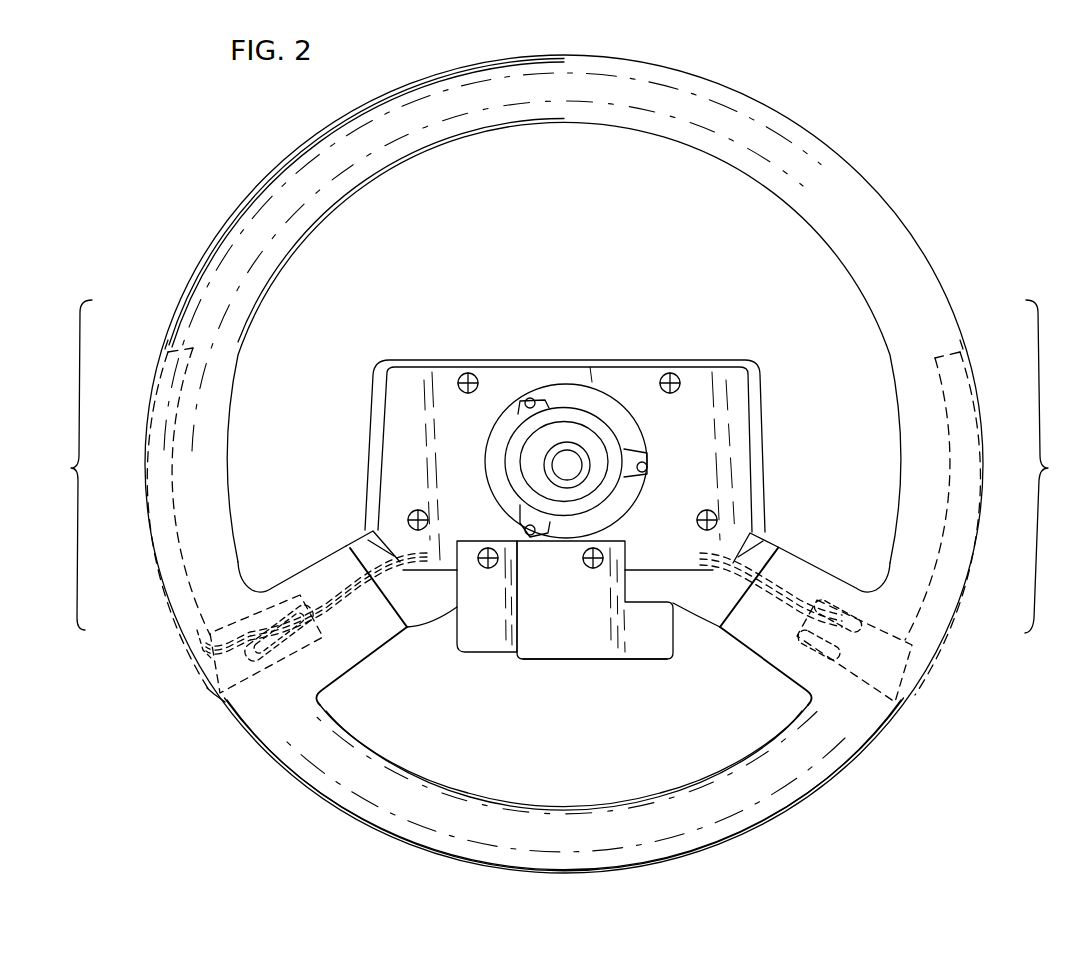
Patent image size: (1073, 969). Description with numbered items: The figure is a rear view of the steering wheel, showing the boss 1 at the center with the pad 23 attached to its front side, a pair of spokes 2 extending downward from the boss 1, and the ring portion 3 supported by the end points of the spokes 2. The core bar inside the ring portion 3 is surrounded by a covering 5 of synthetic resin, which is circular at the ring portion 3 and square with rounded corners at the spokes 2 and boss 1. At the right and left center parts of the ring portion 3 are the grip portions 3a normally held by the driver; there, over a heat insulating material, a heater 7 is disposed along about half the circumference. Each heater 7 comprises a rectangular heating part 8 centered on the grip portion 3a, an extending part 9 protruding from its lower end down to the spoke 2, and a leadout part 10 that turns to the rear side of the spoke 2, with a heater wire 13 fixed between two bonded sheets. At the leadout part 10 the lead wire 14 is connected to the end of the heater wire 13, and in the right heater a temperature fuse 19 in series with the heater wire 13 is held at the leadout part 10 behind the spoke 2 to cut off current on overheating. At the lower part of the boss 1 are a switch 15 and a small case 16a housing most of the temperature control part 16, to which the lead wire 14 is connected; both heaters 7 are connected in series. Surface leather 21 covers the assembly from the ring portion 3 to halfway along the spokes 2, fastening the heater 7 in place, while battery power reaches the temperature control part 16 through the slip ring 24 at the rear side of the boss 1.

The boss 1 is at (606, 372).
The spokes 2 is at (372, 648).
The ring portion 3 is at (795, 120).
The grip portions 3a is at (554, 466).
The covering 5 is at (436, 605).
The heater 7 is at (148, 467).
The heating part 8 is at (178, 468).
The extending part 9 is at (205, 622).
The leadout part 10 is at (277, 665).
The heater wire 13 is at (190, 655).
The lead wire 14 is at (780, 583).
The switch 15 is at (487, 640).
The temperature control part 16 is at (640, 652).
The case 16a is at (577, 652).
The temperature fuse 19 is at (207, 690).
The surface leather 21 is at (915, 254).
The pad 23 is at (754, 405).
The slip ring 24 is at (626, 445).